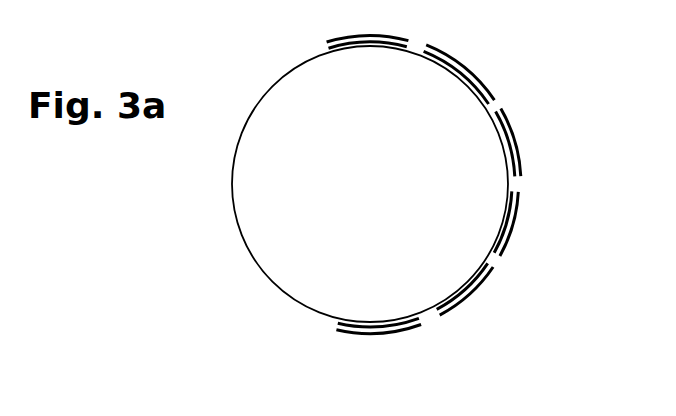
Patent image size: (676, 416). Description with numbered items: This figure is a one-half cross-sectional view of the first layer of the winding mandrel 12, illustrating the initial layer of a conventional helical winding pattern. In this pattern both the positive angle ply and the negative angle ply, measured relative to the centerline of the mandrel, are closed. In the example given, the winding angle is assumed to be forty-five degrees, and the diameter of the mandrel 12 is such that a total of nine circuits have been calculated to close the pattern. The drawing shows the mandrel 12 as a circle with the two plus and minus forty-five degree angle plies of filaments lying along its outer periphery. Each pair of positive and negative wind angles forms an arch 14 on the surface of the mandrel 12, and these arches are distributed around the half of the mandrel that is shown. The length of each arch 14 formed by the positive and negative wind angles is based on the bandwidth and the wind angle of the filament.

The mandrel 12 is at (258, 99).
The arch 14 is at (409, 196).